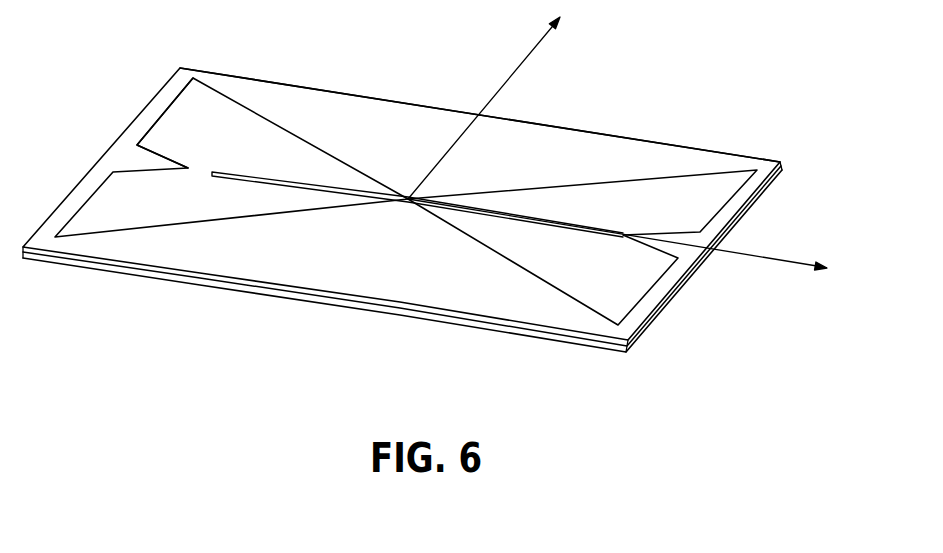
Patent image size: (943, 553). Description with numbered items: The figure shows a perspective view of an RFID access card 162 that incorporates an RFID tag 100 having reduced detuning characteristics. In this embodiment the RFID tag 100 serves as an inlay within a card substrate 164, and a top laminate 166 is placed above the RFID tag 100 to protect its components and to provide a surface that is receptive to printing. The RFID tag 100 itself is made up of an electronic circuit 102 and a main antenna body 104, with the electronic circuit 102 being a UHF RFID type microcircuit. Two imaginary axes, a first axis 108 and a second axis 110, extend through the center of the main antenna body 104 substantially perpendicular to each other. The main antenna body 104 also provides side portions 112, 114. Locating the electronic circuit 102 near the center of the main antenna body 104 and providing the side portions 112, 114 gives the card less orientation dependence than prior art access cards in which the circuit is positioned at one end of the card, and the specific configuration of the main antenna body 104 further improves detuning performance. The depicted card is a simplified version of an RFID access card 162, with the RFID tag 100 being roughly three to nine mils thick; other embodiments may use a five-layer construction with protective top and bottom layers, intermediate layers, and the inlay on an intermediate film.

The RFID tag 100 is at (627, 152).
The electronic circuit 102 is at (410, 199).
The main antenna body 104 is at (267, 145).
The first axis 108 is at (520, 65).
The second axis 110 is at (740, 252).
The side portion 112 is at (187, 127).
The side portion 114 is at (698, 199).
The RFID access card 162 is at (233, 307).
The card substrate 164 is at (543, 335).
The top laminate 166 is at (227, 85).